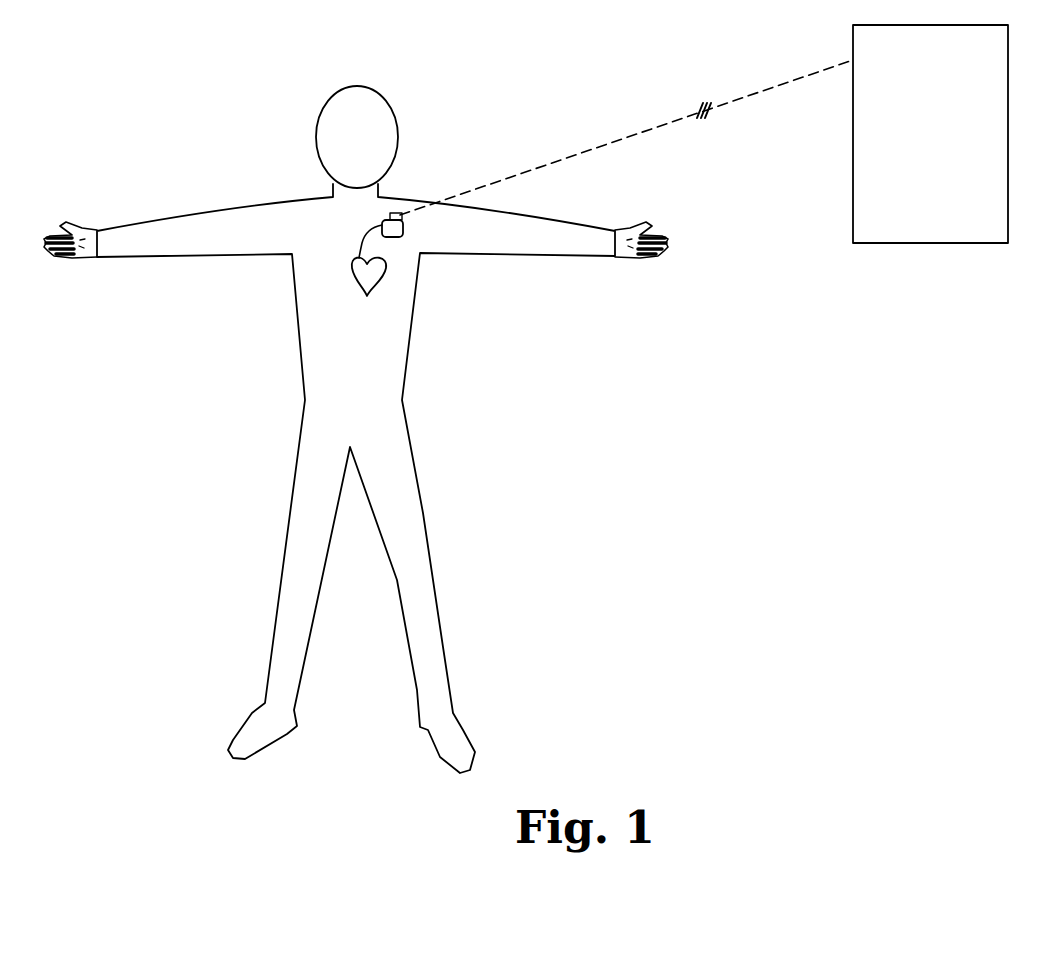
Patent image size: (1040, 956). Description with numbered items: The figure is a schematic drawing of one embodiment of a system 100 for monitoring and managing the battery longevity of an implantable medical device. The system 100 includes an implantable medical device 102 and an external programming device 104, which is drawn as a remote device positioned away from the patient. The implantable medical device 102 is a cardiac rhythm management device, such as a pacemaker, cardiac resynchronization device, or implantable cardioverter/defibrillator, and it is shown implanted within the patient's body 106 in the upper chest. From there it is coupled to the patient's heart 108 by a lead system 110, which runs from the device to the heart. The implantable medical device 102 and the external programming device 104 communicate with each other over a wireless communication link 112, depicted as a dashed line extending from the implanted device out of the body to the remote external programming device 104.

The system 100 is at (432, 75).
The implantable medical device 102 is at (425, 118).
The external programming device 104 is at (870, 243).
The patient's body 106 is at (413, 490).
The patient's heart 108 is at (377, 283).
The lead system 110 is at (364, 225).
The wireless communication link 112 is at (628, 137).